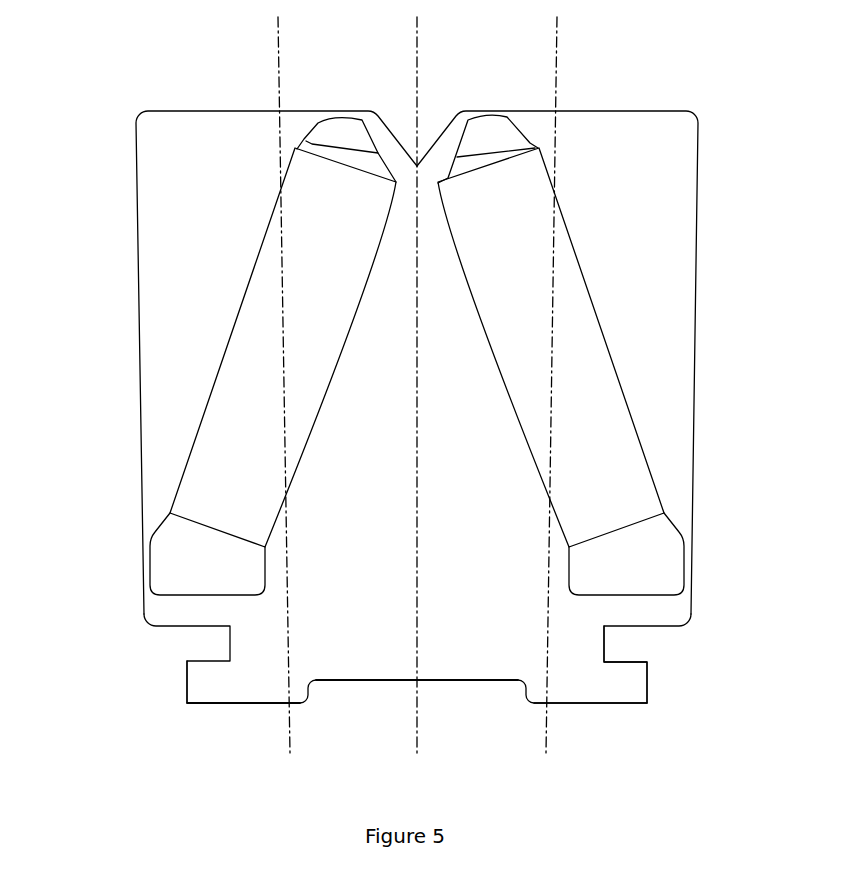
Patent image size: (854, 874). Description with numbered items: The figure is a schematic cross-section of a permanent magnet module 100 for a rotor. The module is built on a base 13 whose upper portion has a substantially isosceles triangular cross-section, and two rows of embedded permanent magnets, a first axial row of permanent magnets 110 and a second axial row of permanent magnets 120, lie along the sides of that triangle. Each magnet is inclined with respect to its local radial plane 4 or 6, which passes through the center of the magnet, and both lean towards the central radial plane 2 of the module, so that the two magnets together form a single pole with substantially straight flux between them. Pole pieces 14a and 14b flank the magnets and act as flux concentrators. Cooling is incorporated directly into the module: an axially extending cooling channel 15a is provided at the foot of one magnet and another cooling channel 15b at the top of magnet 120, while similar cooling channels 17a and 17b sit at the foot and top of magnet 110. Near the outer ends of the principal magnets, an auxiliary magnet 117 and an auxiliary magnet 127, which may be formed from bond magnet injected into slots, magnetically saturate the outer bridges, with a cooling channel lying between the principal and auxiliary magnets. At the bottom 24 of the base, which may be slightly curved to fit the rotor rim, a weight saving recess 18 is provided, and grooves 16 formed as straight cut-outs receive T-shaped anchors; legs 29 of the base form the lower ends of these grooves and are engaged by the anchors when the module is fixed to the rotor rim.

The permanent magnet module 100 is at (403, 407).
The pole piece 14a is at (203, 267).
The pole piece 14b is at (626, 266).
The local radial plane 6 is at (233, 694).
The legs 29 is at (230, 695).
The bottom of the base 24 is at (257, 707).
The grooves 16 is at (636, 643).
The weight saving recess 18 is at (497, 704).
The base 13 is at (405, 525).
The central radial plane 2 is at (417, 734).
The local radial plane 4 is at (547, 723).
The second axial row of permanent magnets 120 is at (315, 185).
The first axial row of permanent magnets 110 is at (540, 238).
The cooling channel 15b is at (305, 138).
The auxiliary magnet 127 is at (345, 132).
The cooling channel 17b is at (510, 149).
The auxiliary magnet 117 is at (487, 132).
The cooling channel 15a is at (182, 557).
The cooling channel 17a is at (648, 570).